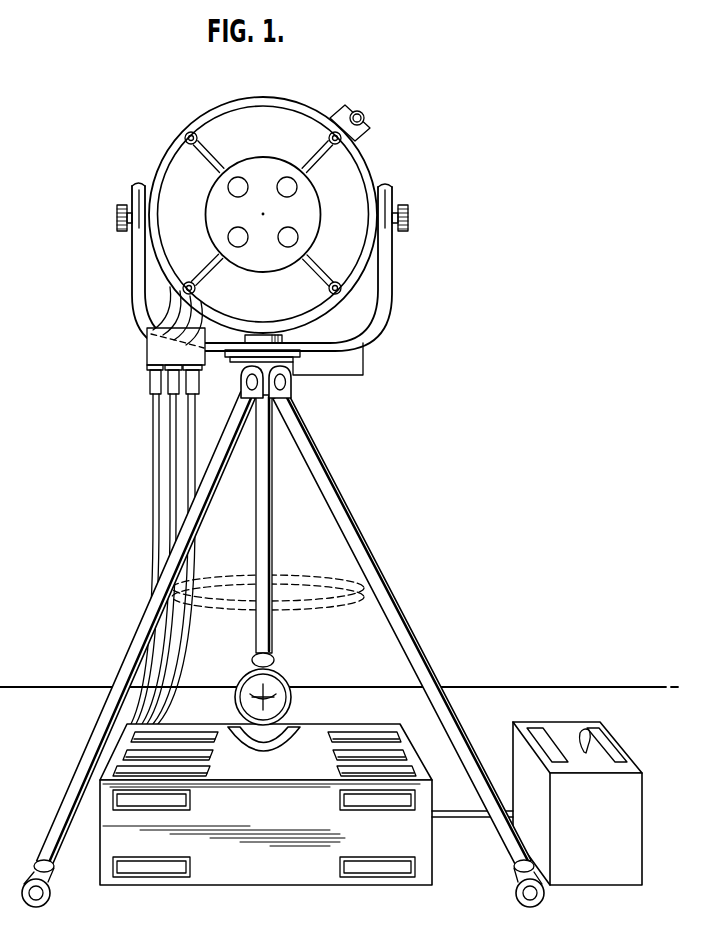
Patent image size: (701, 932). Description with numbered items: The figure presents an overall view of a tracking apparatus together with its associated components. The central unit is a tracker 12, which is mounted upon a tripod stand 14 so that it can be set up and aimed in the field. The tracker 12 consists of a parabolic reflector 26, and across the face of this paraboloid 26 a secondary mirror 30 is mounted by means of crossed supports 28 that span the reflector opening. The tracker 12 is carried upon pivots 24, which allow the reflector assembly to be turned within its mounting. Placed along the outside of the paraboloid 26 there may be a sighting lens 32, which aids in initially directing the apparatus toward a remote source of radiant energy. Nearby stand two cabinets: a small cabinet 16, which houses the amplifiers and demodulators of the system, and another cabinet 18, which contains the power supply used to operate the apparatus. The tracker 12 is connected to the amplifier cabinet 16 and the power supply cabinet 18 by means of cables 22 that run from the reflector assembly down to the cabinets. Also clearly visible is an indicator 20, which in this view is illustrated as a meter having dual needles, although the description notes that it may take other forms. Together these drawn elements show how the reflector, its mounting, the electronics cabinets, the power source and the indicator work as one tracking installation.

The tracker 12 is at (140, 133).
The tripod stand 14 is at (360, 515).
The small cabinet 16 is at (265, 873).
The cabinet 18 is at (597, 876).
The indicator 20 is at (274, 681).
The cables 22 is at (188, 437).
The pivots 24 is at (132, 200).
The parabolic reflector 26 is at (258, 97).
The crossed supports 28 is at (206, 147).
The secondary mirror 30 is at (270, 184).
The sighting lens 32 is at (365, 117).